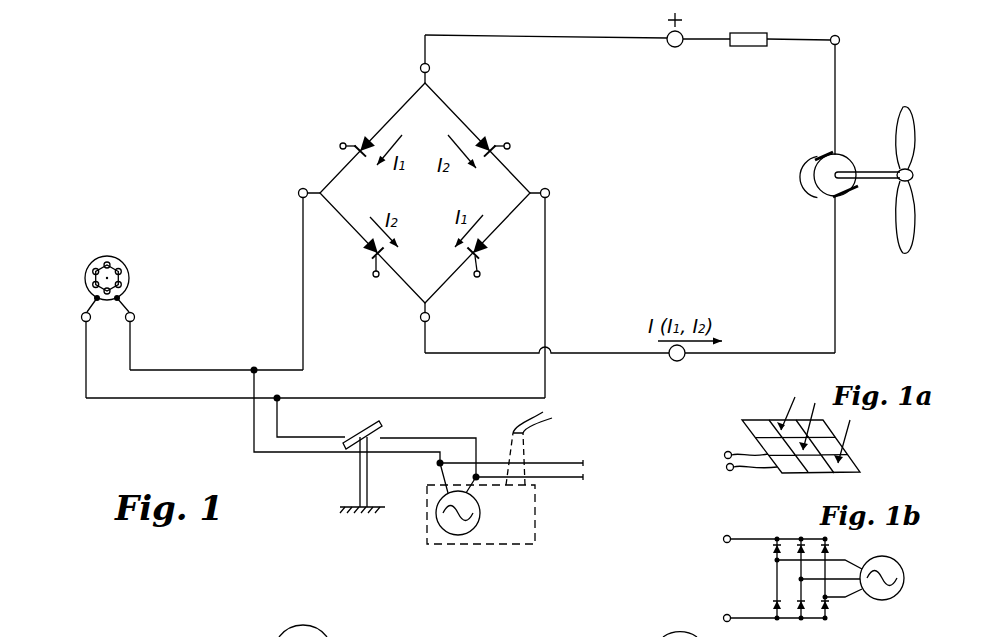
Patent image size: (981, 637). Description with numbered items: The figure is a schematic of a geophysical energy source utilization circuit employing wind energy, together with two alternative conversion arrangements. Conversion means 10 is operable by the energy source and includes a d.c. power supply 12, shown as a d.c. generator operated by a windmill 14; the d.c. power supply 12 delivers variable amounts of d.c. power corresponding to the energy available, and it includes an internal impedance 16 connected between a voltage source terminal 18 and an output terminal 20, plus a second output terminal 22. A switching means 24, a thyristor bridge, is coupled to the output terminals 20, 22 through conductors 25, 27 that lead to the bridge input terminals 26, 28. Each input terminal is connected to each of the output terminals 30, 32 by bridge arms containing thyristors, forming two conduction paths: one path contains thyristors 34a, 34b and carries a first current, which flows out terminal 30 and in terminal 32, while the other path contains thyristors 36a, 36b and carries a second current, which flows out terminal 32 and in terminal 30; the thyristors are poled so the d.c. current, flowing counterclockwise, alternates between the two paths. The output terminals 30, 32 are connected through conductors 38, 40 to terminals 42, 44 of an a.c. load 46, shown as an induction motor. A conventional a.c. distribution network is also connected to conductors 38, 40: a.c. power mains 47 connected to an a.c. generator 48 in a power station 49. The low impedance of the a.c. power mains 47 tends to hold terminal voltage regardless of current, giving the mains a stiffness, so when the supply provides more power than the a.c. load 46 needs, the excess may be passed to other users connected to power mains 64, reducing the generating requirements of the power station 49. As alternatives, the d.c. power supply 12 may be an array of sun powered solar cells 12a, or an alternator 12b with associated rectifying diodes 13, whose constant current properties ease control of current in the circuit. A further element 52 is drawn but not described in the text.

In FIG. 1, the conversion means 10 is at (803, 192).
In FIG. 1, the d.c. power supply 12 is at (845, 157).
In FIG. 1A, the array of sun powered solar cells 12a is at (856, 457).
In FIG. 1B, the alternator 12b is at (886, 600).
In FIG. 1B, the rectifying diodes 13 is at (817, 579).
In FIG. 1, the windmill 14 is at (898, 107).
In FIG. 1, the internal impedance 16 is at (766, 33).
In FIG. 1, the voltage source terminal 18 is at (840, 38).
In FIG. 1A, the voltage source terminal 18 is at (728, 451).
In FIG. 1B, the voltage source terminal 18 is at (723, 539).
In FIG. 1, the output terminal 20 is at (675, 47).
In FIG. 1, the second output terminal 22 is at (677, 361).
In FIG. 1A, the second output terminal 22 is at (731, 470).
In FIG. 1B, the second output terminal 22 is at (723, 618).
In FIG. 1, the switching means 24 is at (437, 206).
In FIG. 1, the conductor 25 is at (567, 36).
In FIG. 1, the input terminal 26 is at (430, 68).
In FIG. 1, the conductor 27 is at (603, 352).
In FIG. 1, the input terminal 28 is at (430, 318).
In FIG. 1, the output terminal 30 is at (303, 188).
In FIG. 1, the output terminal 32 is at (549, 190).
In FIG. 1, the thyristor 34a is at (366, 137).
In FIG. 1, the thyristor 34b is at (481, 262).
In FIG. 1, the thyristor 36a is at (488, 134).
In FIG. 1, the thyristor 36b is at (365, 256).
In FIG. 1, the conductor 38 is at (193, 370).
In FIG. 1, the conductor 40 is at (357, 398).
In FIG. 1, the terminal 42 is at (133, 313).
In FIG. 1, the terminal 44 is at (82, 313).
In FIG. 1, the a.c. load 46 is at (113, 258).
In FIG. 1, the a.c. power mains 47 is at (294, 466).
In FIG. 1, the a.c. generator 48 is at (437, 525).
In FIG. 1, the power station 49 is at (536, 525).
In FIG. 1, the component (partially shown) 52 is at (339, 636).
In FIG. 1, the power mains 64 is at (584, 477).